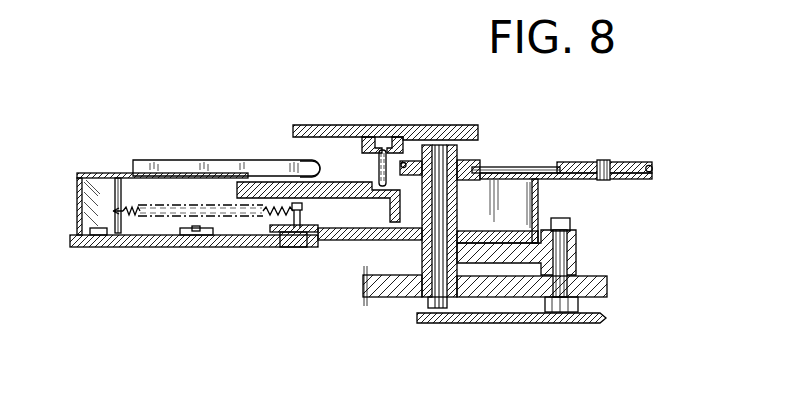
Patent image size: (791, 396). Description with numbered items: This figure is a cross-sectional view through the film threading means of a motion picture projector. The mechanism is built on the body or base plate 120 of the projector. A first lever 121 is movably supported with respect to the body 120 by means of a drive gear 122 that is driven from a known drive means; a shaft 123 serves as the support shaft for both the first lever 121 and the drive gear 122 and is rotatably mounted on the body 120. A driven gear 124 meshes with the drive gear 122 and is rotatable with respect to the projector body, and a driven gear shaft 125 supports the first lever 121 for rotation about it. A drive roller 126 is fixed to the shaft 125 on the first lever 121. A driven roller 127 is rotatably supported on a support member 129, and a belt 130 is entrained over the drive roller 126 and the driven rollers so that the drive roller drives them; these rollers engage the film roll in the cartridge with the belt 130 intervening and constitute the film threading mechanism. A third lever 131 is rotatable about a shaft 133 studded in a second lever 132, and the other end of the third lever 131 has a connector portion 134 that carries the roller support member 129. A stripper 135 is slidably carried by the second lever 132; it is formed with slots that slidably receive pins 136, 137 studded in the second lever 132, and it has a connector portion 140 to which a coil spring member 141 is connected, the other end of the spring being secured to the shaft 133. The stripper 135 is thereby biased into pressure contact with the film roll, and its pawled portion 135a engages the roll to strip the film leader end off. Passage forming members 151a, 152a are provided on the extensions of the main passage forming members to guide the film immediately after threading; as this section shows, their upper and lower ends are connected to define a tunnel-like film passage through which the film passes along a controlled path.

The body or base plate 120 is at (528, 323).
The first lever 121 is at (572, 253).
The drive gear 122 is at (597, 289).
The shaft 123 is at (565, 236).
The driven gear 124 is at (385, 297).
The driven gear shaft 125 is at (437, 308).
The drive roller 126 is at (476, 167).
The driven roller 127 is at (614, 162).
The support member 129 is at (653, 169).
The belt 130 is at (522, 173).
The third lever 131 is at (340, 241).
The second lever 132 is at (152, 247).
The shaft 133 is at (302, 207).
The connector portion 134 is at (520, 202).
The stripper 135 is at (228, 160).
The pawled portion 135a is at (315, 163).
The pin 136 is at (100, 235).
The pin 137 is at (195, 235).
The connector portion 140 is at (100, 173).
The coil spring member 141 is at (161, 217).
The passage forming member 151a is at (364, 185).
The passage forming member 152a is at (391, 186).